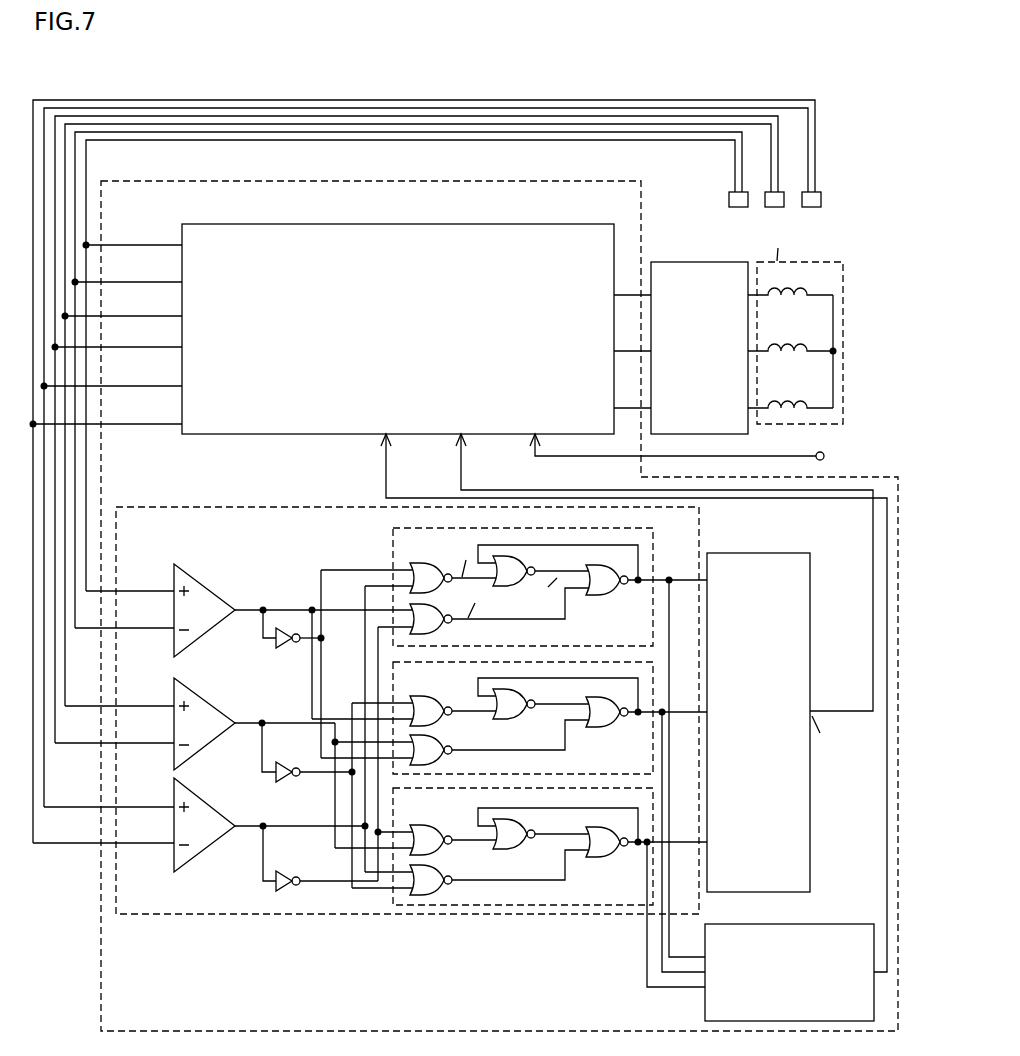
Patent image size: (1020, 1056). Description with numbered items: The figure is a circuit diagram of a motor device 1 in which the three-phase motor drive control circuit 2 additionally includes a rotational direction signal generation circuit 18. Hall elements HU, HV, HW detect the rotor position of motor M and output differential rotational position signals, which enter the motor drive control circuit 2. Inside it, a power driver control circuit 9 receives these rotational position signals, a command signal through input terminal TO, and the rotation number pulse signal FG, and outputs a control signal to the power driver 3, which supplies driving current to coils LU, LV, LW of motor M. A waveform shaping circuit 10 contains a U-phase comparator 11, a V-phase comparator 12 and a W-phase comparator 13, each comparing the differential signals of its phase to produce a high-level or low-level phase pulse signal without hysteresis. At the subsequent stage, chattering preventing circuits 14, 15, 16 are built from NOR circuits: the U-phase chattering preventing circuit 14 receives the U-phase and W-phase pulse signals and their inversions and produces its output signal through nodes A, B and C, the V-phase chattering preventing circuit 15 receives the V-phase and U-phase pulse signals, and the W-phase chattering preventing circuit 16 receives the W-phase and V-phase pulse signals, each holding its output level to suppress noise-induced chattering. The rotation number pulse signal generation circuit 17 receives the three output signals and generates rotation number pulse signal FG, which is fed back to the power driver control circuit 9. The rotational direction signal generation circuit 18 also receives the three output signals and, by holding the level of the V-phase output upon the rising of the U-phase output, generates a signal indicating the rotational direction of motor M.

The motor device 1 is at (388, 81).
The motor drive control circuit 2 is at (641, 191).
The power driver 3 is at (699, 262).
The power driver control circuit 9 is at (492, 224).
The waveform shaping circuit 10 is at (275, 507).
The U-phase comparator 11 is at (200, 580).
The V-phase comparator 12 is at (199, 693).
The W-phase comparator 13 is at (200, 792).
The U-phase chattering preventing circuit 14 is at (393, 540).
The V-phase chattering preventing circuit 15 is at (392, 673).
The W-phase chattering preventing circuit 16 is at (393, 897).
The rotation number pulse signal generation circuit 17 is at (742, 552).
The rotational direction signal generation circuit 18 is at (705, 1005).